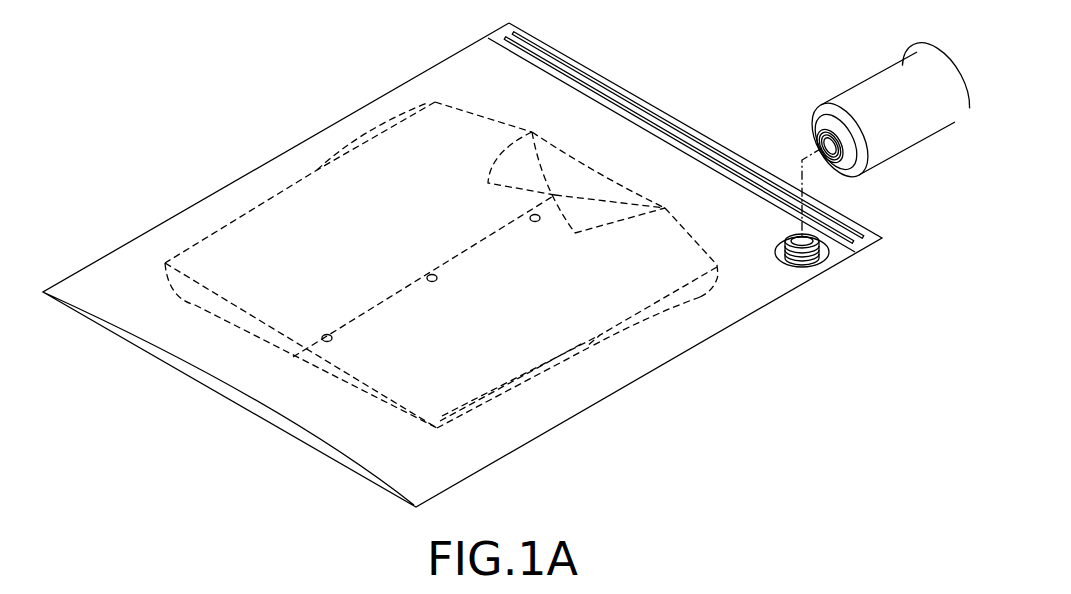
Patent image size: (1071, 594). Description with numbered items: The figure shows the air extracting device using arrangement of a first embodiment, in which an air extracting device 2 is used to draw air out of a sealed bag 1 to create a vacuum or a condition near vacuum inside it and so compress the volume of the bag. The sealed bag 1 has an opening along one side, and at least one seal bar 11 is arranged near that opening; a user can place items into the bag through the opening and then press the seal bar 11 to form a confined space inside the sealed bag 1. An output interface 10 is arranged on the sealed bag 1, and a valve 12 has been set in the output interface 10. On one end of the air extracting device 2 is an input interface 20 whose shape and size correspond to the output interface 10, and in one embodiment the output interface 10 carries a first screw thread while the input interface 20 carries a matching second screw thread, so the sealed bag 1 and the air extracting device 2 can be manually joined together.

The sealed bag 1 is at (435, 78).
The seal bar 11 is at (618, 90).
The air extracting device 2 is at (852, 96).
The input interface 20 is at (812, 140).
The output interface 10 is at (843, 235).
The valve 12 is at (812, 255).